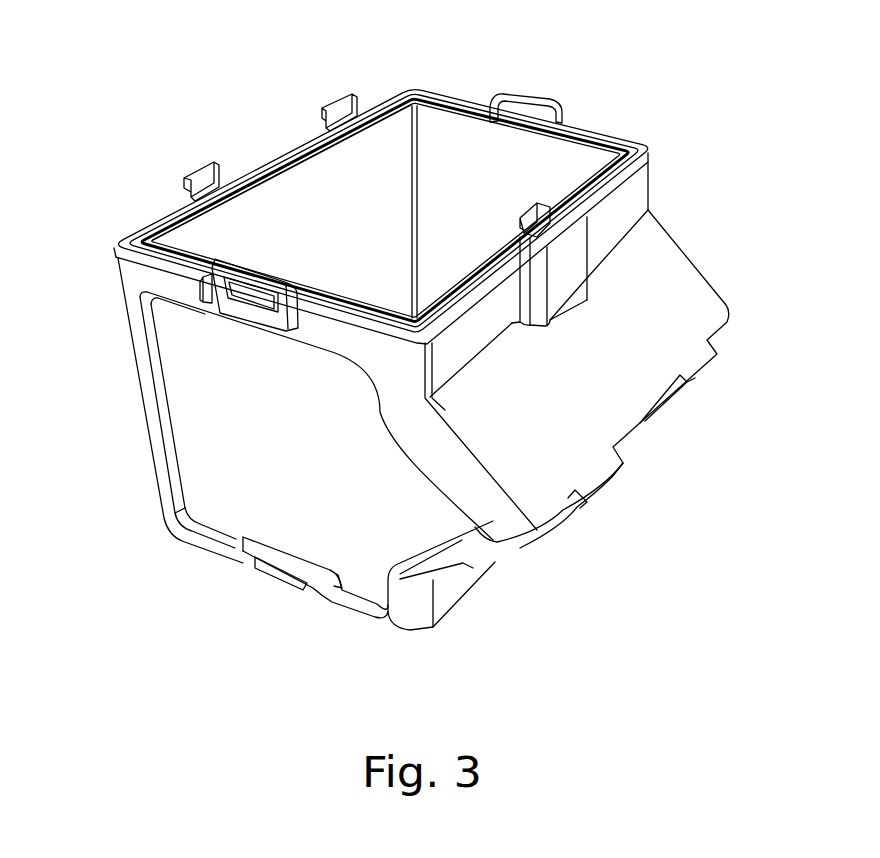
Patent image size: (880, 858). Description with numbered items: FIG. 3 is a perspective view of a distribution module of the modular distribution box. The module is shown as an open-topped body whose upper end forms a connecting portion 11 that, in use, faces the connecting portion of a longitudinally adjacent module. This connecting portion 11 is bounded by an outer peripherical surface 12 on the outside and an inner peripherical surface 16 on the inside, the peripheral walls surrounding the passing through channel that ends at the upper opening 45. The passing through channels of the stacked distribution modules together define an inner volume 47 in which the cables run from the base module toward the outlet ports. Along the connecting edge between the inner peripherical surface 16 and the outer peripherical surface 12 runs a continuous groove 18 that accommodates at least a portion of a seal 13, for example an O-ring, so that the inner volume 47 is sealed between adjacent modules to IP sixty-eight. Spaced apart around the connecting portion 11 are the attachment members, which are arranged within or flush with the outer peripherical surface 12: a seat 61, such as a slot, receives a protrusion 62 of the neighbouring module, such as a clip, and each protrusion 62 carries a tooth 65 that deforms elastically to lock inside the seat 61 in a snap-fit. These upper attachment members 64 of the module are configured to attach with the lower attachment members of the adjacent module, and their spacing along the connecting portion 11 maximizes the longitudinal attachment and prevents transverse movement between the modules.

The connecting portion 11 is at (156, 219).
The outer peripherical surface 12 is at (327, 337).
The seal 13 is at (423, 333).
The inner peripherical surface 16 is at (297, 195).
The continuous groove 18 is at (634, 158).
The upper opening 45 is at (373, 150).
The inner volume 47 is at (452, 157).
The seat 61 is at (520, 97).
The protrusion 62 is at (203, 179).
The upper attachment member 64 is at (328, 95).
The tooth 65 is at (540, 205).